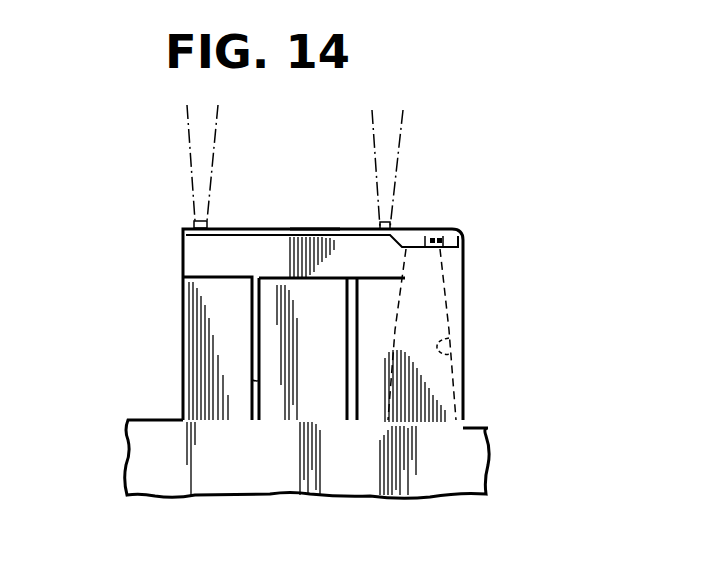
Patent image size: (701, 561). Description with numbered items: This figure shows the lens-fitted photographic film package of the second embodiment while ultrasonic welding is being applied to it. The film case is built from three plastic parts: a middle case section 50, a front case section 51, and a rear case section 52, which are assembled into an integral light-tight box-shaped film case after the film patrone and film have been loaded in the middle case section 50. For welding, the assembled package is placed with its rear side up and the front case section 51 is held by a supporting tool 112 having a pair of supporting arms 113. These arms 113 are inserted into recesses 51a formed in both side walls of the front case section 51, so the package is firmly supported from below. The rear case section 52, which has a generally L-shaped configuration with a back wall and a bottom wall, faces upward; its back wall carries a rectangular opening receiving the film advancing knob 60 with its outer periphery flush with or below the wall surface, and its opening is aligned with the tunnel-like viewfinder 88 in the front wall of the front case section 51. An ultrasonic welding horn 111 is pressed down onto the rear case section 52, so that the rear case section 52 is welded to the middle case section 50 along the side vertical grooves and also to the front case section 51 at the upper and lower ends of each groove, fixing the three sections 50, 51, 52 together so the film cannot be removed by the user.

The middle case section 50 is at (218, 250).
The front case section 51 is at (215, 337).
The recesses 51a is at (252, 382).
The rear case section 52 is at (311, 228).
The film advancing knob 60 is at (443, 229).
The tunnel-like viewfinder 88 is at (455, 349).
The ultrasonic welding horn 111 is at (190, 143).
The supporting tool 112 is at (442, 448).
The supporting arms 113 is at (332, 303).